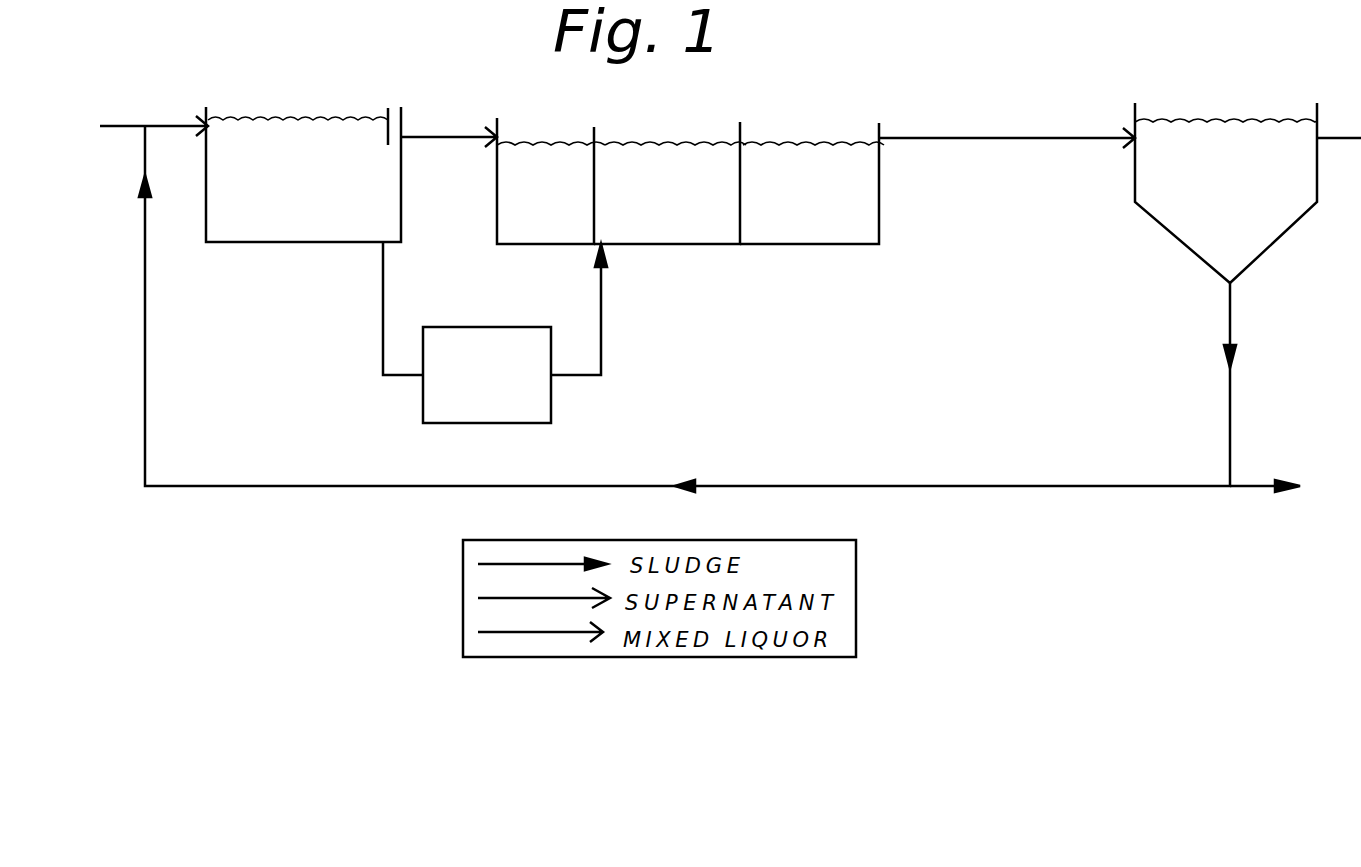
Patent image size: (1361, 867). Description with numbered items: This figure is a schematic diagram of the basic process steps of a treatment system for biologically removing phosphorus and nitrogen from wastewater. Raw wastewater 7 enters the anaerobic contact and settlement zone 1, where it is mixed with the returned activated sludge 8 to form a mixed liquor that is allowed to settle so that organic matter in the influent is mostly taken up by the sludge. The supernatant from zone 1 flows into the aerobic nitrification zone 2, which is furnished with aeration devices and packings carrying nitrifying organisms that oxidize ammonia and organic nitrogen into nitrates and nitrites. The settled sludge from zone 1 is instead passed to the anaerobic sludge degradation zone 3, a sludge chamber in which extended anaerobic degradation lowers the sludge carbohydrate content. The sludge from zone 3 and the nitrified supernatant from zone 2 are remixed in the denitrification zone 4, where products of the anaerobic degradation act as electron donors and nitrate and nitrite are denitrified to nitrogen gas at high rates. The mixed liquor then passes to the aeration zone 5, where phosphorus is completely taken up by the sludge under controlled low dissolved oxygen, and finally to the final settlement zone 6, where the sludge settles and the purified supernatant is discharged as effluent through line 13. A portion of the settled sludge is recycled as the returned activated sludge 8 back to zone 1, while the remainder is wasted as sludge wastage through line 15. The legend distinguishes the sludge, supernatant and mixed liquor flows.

The anaerobic contact and settlement zone 1 is at (312, 191).
The aerobic nitrification zone furnished with packings 2 is at (563, 198).
The anaerobic sludge degradation zone 3 is at (497, 387).
The denitrification zone 4 is at (690, 207).
The aeration zone 5 is at (828, 205).
The final settlement zone 6 is at (1252, 202).
The wastewater 7 is at (103, 125).
The returned activated sludge 8 is at (733, 486).
The effluent supernatant line 13 is at (1339, 136).
The waste sludge line 15 is at (1248, 487).